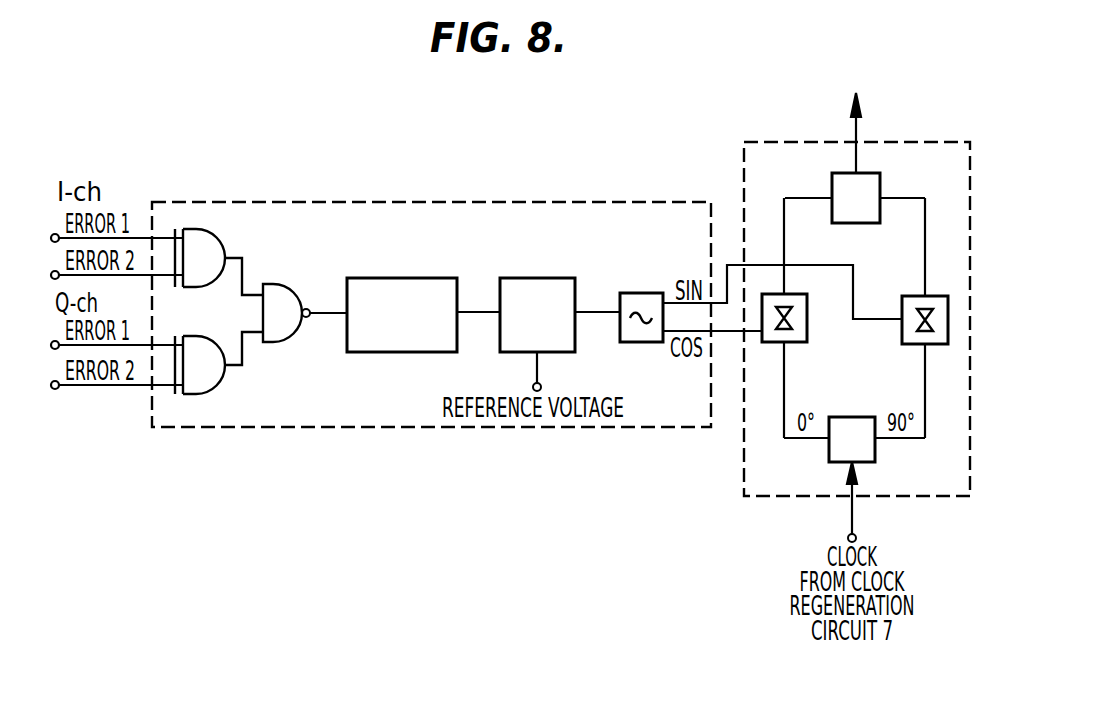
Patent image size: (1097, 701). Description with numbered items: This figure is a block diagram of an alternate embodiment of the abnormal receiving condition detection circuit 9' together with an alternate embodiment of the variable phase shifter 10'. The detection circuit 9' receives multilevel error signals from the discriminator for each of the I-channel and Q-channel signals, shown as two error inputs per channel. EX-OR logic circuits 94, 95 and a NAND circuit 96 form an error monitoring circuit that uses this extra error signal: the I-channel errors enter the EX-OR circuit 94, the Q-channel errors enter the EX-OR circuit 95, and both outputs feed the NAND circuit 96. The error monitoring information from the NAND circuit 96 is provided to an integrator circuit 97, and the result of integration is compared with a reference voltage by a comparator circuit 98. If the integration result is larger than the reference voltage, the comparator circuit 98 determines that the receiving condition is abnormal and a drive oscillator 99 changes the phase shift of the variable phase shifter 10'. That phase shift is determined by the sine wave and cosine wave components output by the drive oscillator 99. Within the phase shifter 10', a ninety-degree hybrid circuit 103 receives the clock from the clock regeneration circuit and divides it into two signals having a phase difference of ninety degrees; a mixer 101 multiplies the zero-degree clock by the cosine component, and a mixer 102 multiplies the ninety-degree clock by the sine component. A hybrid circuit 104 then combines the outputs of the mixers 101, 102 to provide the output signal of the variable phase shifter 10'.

The abnormal receiving condition detection circuit 9' is at (431, 291).
The variable phase shifter 10' is at (833, 305).
The EX-OR logic circuit 94 is at (222, 240).
The EX-OR logic circuit 95 is at (221, 389).
The NAND circuit 96 is at (268, 343).
The integrator circuit 97 is at (388, 353).
The comparator circuit 98 is at (512, 278).
The drive oscillator 99 is at (637, 293).
The mixer 101 is at (808, 333).
The mixer 102 is at (900, 296).
The 90° hybrid circuit 103 is at (873, 453).
The hybrid circuit 104 is at (882, 180).